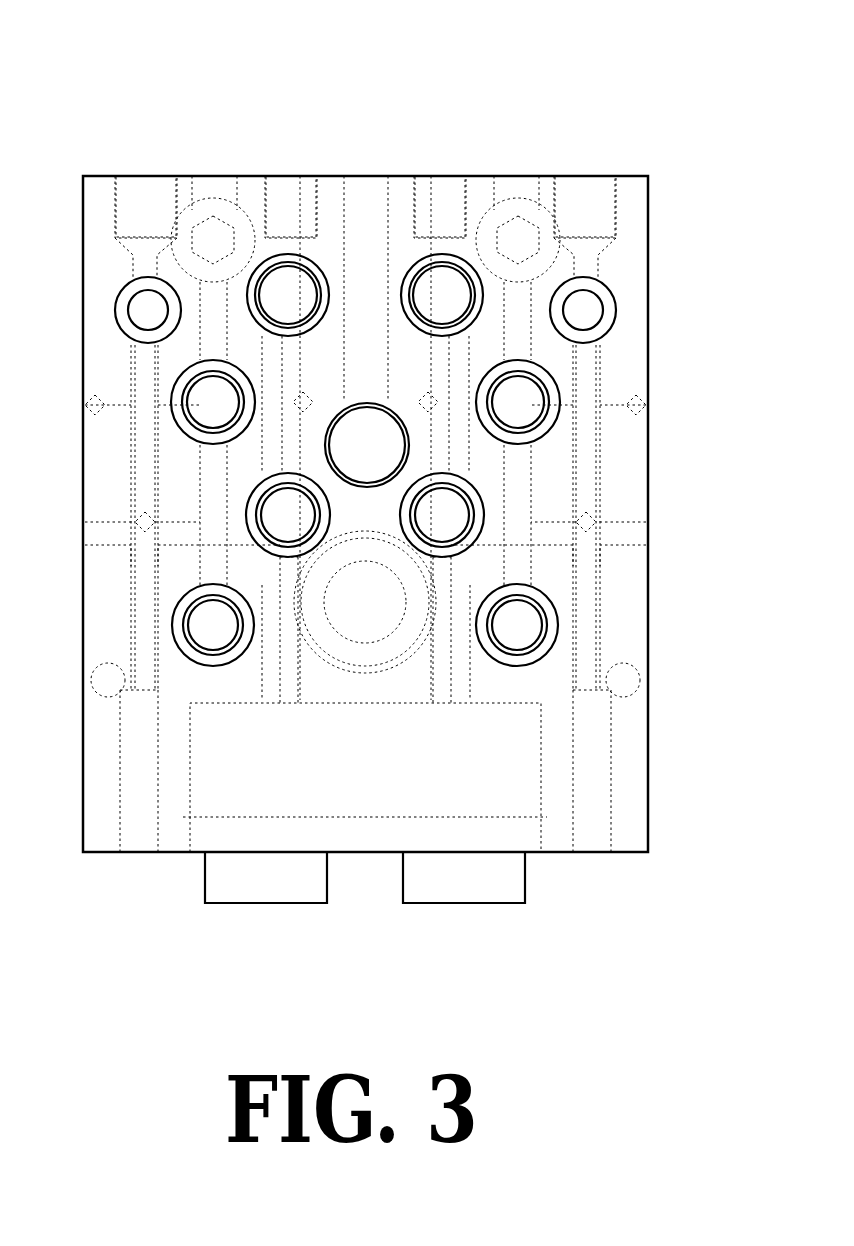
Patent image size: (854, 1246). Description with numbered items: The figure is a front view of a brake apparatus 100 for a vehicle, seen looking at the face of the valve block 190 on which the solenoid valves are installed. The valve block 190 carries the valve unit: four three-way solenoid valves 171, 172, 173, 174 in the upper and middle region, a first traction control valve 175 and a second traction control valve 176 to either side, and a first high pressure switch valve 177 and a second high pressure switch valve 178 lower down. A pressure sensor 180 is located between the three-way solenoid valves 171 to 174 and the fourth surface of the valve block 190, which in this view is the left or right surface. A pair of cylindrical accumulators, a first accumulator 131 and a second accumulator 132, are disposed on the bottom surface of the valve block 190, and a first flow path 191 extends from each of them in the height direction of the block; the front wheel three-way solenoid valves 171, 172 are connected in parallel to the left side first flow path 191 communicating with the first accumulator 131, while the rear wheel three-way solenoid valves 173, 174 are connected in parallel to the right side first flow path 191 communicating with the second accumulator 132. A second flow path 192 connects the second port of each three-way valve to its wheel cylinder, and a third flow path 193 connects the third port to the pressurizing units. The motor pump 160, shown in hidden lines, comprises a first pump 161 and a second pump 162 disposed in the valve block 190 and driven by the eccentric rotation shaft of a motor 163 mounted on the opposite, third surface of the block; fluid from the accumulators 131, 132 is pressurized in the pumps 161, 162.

The brake apparatus 100 is at (108, 35).
The first accumulator 131 is at (207, 880).
The second accumulator 132 is at (524, 880).
The motor pump 160 is at (364, 772).
The first pump 161 is at (256, 605).
The second pump 162 is at (478, 598).
The motor 163 is at (370, 632).
The 3-way solenoid valve 171 is at (283, 277).
The 3-way solenoid valve 172 is at (275, 510).
The 3-way solenoid valve 173 is at (447, 278).
The 3-way solenoid valve 174 is at (456, 510).
The first traction control valve 175 is at (205, 392).
The second traction control valve 176 is at (526, 392).
The first high pressure switch valve 177 is at (198, 630).
The second high pressure switch valve 178 is at (533, 630).
The pressure sensor 180 is at (133, 313).
The valve block 190 is at (648, 793).
The first flow path 191 is at (270, 556).
The second flow path 192 is at (138, 182).
The third flow path 193 is at (132, 557).